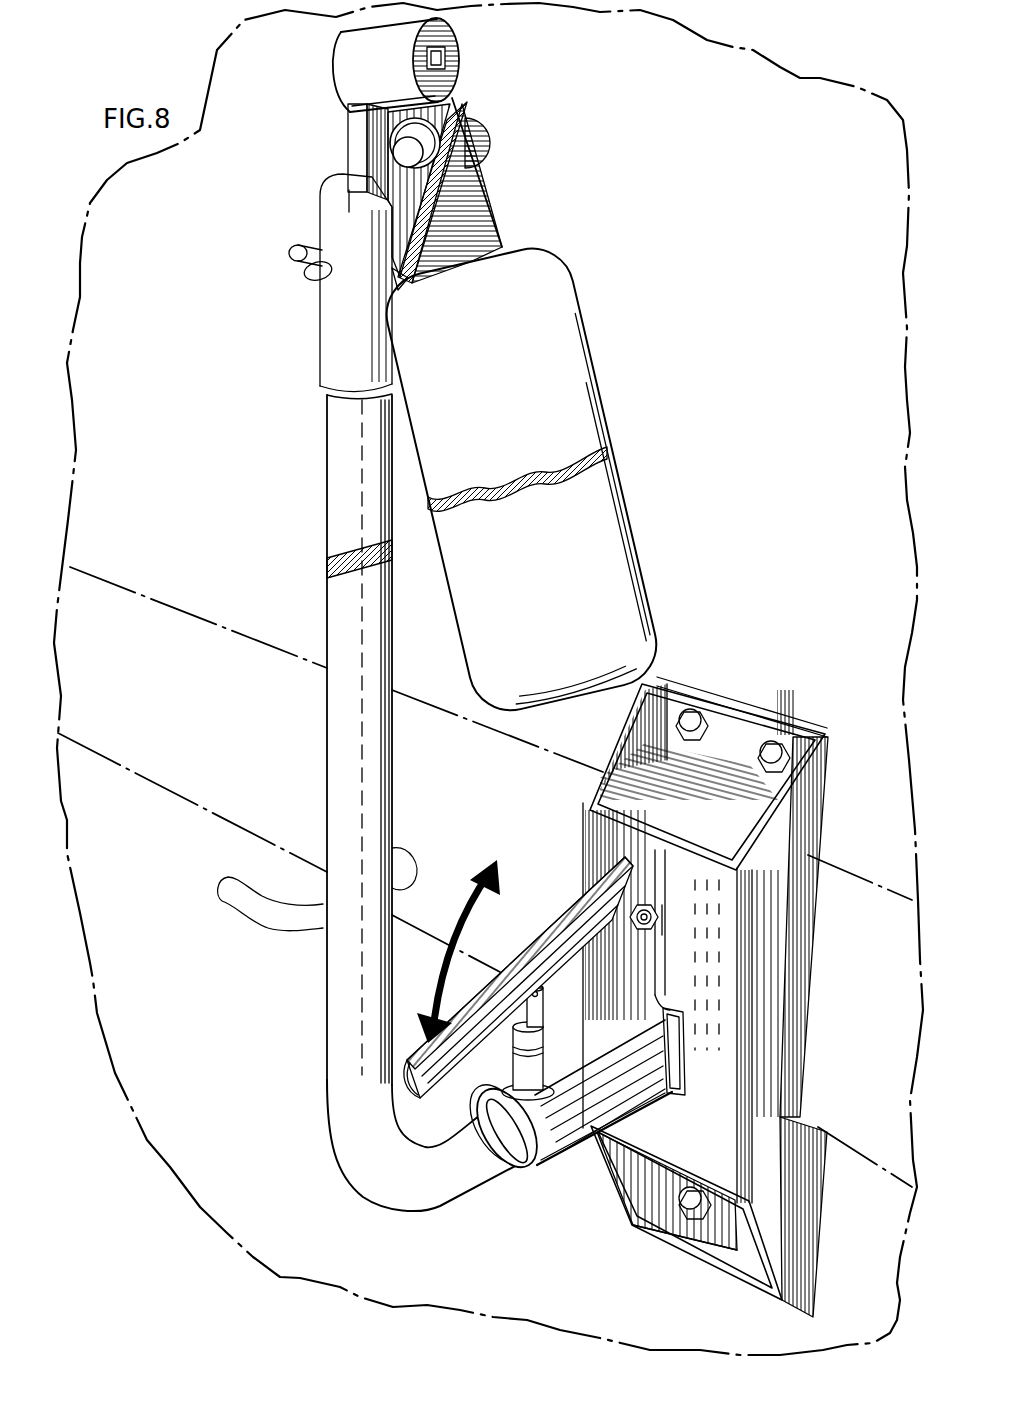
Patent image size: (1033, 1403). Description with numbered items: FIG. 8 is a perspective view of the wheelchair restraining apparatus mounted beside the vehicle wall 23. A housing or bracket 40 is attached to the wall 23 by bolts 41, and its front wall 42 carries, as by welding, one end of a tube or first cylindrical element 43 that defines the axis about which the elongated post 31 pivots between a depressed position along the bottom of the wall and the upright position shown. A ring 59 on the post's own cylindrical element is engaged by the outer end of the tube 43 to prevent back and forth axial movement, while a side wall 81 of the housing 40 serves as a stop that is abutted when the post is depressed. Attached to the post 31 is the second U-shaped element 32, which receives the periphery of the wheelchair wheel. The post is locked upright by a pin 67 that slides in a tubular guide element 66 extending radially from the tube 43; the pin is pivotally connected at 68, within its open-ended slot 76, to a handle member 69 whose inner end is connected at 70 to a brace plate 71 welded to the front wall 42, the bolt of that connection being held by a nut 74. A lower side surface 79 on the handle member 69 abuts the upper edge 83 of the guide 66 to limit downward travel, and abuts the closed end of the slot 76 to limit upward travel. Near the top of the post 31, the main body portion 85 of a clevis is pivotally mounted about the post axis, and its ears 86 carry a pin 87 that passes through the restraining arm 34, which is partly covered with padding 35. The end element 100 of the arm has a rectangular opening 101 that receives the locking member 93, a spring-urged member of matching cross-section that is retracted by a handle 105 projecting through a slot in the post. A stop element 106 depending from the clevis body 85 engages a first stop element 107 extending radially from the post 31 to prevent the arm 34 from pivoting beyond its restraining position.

The end element 100 is at (407, 65).
The rectangular opening 101 is at (458, 52).
The locking member 93 is at (358, 132).
The clevis ears 86 is at (450, 145).
The clevis main body portion 85 is at (330, 217).
The restraining arm 34 is at (496, 233).
The pin 87 is at (420, 168).
The handle 105 is at (296, 252).
The first stop element 107 is at (306, 272).
The stop element 106 is at (400, 274).
The padding 35 is at (490, 377).
The wall 23 is at (468, 797).
The second U-shaped element 32 is at (226, 889).
The post 31 is at (328, 975).
The bolts 41 is at (787, 737).
The housing or bracket 40 is at (724, 980).
The side wall 81 is at (793, 875).
The pivotal connection 70 is at (656, 922).
The nut 74 is at (662, 930).
The front wall 42 is at (718, 953).
The brace plate 71 is at (630, 995).
The pivotal connection 68 is at (550, 1008).
The pin 67 is at (518, 977).
The open-ended slot 76 is at (521, 985).
The upper edge 83 is at (543, 1022).
The lower side surface 79 is at (546, 1050).
The tubular guide element 66 is at (542, 1012).
The handle member 69 is at (446, 1087).
The ring 59 is at (480, 1104).
The tube or first cylindrical element 43 is at (560, 1135).